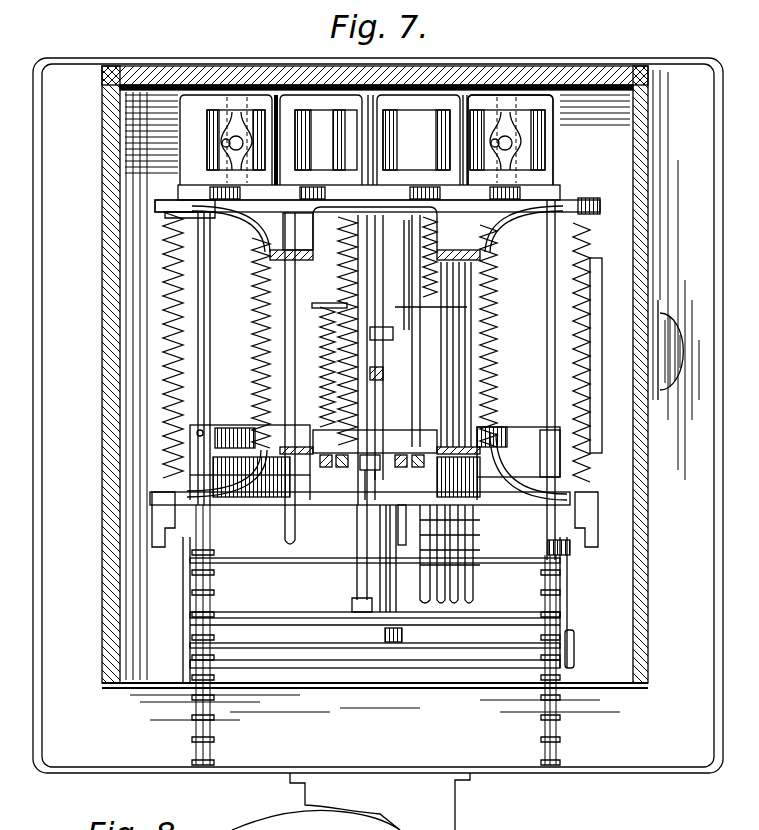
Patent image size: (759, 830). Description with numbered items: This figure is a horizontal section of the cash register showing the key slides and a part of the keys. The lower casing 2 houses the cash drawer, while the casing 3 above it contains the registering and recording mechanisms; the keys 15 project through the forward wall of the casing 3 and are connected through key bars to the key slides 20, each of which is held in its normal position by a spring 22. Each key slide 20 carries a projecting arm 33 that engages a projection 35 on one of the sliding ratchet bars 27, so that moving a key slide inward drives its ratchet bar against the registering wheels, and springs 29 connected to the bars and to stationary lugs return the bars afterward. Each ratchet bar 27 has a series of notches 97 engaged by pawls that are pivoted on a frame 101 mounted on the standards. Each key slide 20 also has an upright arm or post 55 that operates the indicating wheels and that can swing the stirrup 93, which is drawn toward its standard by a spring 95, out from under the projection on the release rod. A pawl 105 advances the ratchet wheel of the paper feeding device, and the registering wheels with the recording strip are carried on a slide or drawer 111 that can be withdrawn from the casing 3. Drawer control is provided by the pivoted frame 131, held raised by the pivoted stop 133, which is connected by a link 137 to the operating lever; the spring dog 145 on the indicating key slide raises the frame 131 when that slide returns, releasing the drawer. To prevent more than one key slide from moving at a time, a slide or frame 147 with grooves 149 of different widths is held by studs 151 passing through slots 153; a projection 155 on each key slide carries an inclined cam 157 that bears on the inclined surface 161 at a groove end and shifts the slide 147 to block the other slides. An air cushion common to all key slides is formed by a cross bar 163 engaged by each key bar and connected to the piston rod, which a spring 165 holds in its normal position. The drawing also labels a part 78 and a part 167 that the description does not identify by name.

The casing 2 is at (378, 415).
The casing 3 is at (545, 68).
The keys 15 is at (192, 740).
The key slide 20 is at (212, 272).
The spring 22 is at (163, 350).
The sliding ratchet bars 27 is at (250, 210).
The springs 29 is at (432, 245).
The projecting arm 33 is at (227, 427).
The projection 35 is at (457, 418).
The upright arm or post 55 is at (237, 467).
The nut 78 is at (570, 548).
The stirrup or frame 93 is at (315, 427).
The spring 95 is at (360, 490).
The notches 97 is at (470, 523).
The frame 101 is at (406, 258).
The pawl 105 is at (407, 308).
The slide or drawer 111 is at (513, 245).
The pivoted frame 131 is at (567, 583).
The pivoted stop 133 is at (402, 636).
The link 137 is at (386, 548).
The spring dog 145 is at (576, 640).
The slide or frame 147 is at (543, 145).
The grooves 149 is at (458, 97).
The studs 151 is at (370, 143).
The slots 153 is at (222, 142).
The projection 155 is at (306, 194).
The inclined cam 157 is at (416, 140).
The inclined surface 161 is at (195, 195).
The cross bar 163 is at (245, 617).
The spring 165 is at (323, 317).
The rod foot 167 is at (352, 575).